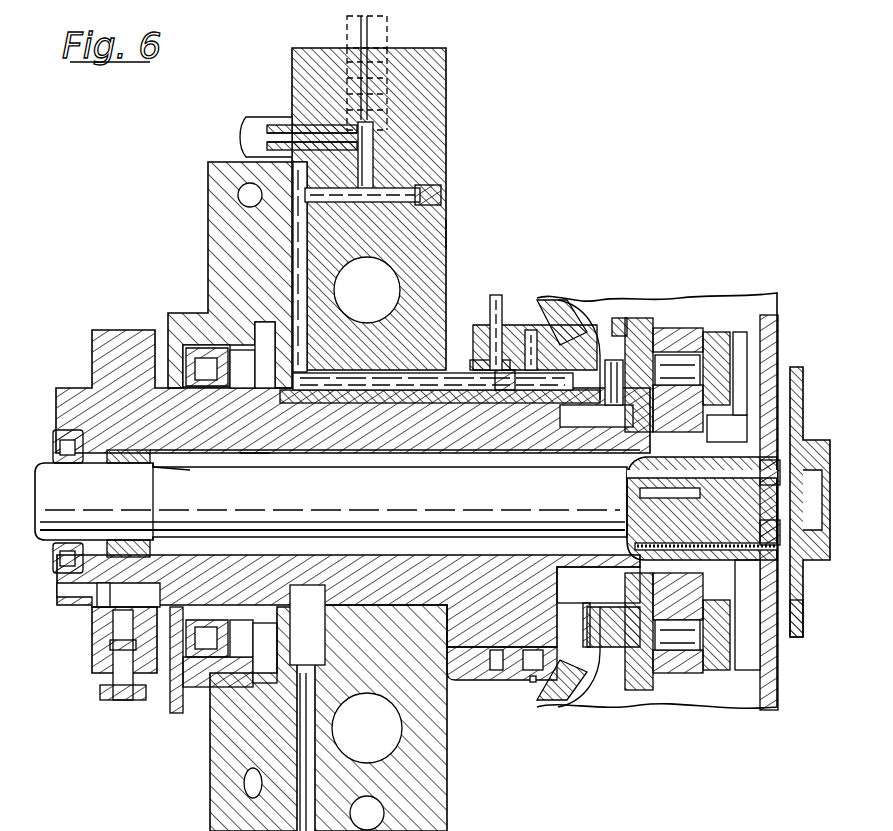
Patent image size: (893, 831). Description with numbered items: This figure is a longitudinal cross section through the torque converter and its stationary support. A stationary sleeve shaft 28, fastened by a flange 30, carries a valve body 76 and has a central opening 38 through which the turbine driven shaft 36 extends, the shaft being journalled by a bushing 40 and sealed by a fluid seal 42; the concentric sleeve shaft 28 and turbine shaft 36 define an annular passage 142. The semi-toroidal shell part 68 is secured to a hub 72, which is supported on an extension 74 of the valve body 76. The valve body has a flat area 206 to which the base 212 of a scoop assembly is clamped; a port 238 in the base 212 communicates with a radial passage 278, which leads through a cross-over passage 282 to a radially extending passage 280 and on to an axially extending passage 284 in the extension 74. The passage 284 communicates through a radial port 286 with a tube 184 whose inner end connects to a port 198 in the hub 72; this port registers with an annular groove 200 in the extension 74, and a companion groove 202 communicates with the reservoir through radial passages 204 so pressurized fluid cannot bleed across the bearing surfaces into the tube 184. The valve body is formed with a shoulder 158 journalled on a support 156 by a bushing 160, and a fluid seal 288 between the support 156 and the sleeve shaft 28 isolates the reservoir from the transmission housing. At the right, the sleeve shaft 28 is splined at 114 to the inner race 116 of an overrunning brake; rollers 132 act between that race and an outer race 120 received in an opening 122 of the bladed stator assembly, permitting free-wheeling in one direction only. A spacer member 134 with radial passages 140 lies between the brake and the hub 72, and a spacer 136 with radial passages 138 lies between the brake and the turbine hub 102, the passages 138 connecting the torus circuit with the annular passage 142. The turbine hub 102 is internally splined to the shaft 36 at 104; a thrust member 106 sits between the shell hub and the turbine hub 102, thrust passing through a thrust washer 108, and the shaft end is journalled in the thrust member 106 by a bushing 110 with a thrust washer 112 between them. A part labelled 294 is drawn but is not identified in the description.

The base 212 is at (446, 92).
The port 238 is at (446, 133).
The flat area 206 is at (446, 152).
The radial passage 278 is at (446, 172).
The cross-over passage 282 is at (446, 222).
The valve body 76 is at (446, 232).
The radially extending passage 280 is at (293, 212).
The flange 30 is at (97, 330).
The bushing 160 is at (205, 318).
The fluid seal 288 is at (178, 372).
The fluid seal 42 is at (70, 463).
The bushing 40 is at (120, 463).
The central opening 38 is at (196, 468).
The stationary sleeve shaft 28 is at (252, 455).
The axially extending passage 284 is at (300, 385).
The turbine driven shaft 36 is at (377, 517).
The annular passage 142 is at (440, 392).
The radial port 286 is at (500, 380).
The extension 74 is at (550, 405).
The radial passages 140 is at (590, 428).
The tube 184 is at (530, 330).
The port 198 is at (500, 318).
The radial passages 204 is at (565, 302).
The shell part 68 is at (607, 300).
The spacer member 134 is at (640, 335).
The outer race 120 is at (665, 330).
The opening 122 is at (678, 356).
The spacer 136 is at (718, 335).
The radial passages 138 is at (745, 332).
The thrust member 106 is at (798, 367).
The spline connection 104 is at (727, 387).
The inner race 116 is at (672, 484).
The bushing 110 is at (770, 480).
The splined end 114 is at (702, 508).
The thrust washer 112 is at (778, 525).
The thrust washer 108 is at (800, 638).
The hub 72 is at (590, 680).
The rollers 132 is at (670, 650).
The turbine hub 102 is at (760, 700).
The annular groove 200 is at (490, 680).
The companion groove 202 is at (531, 682).
The bore 294 is at (395, 740).
The shoulder 158 is at (210, 718).
The support 156 is at (207, 725).